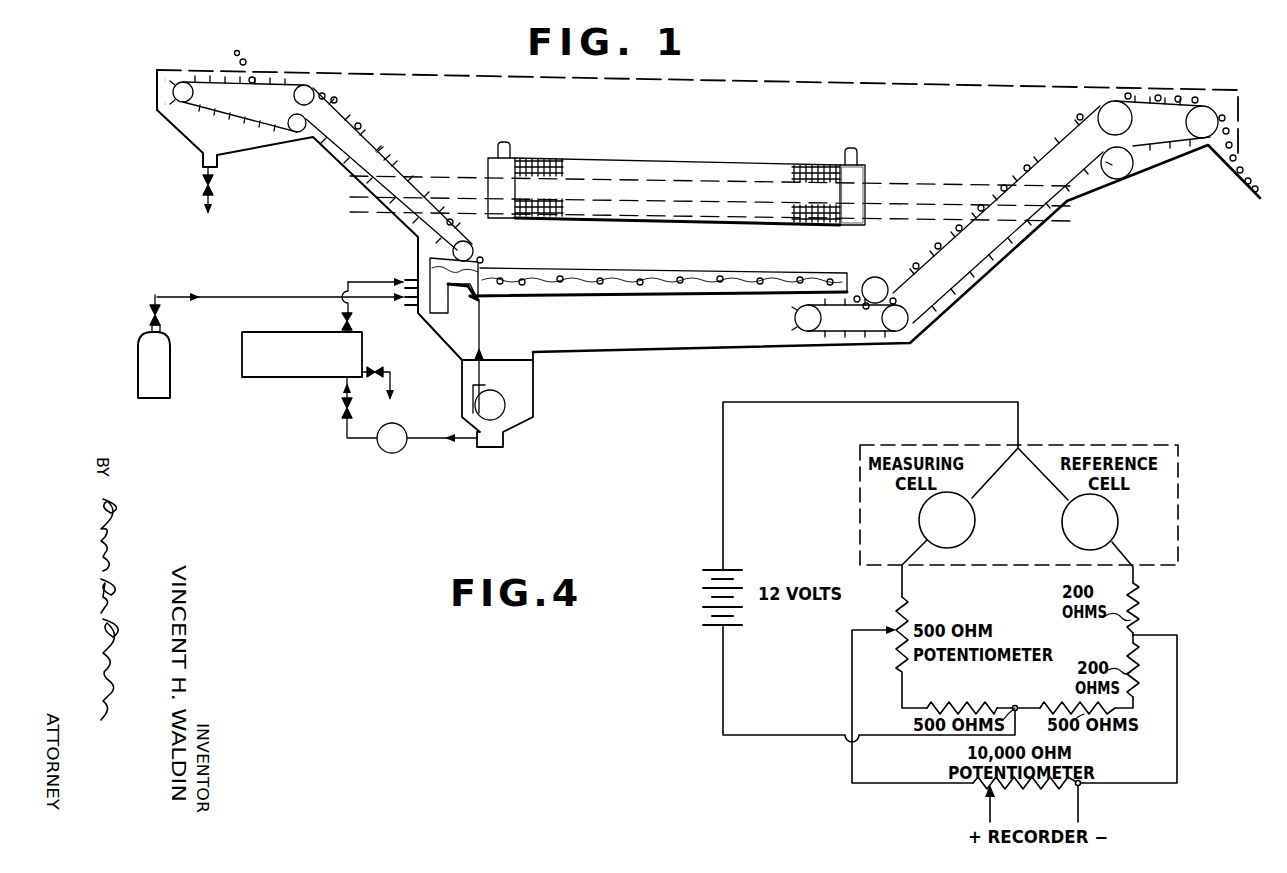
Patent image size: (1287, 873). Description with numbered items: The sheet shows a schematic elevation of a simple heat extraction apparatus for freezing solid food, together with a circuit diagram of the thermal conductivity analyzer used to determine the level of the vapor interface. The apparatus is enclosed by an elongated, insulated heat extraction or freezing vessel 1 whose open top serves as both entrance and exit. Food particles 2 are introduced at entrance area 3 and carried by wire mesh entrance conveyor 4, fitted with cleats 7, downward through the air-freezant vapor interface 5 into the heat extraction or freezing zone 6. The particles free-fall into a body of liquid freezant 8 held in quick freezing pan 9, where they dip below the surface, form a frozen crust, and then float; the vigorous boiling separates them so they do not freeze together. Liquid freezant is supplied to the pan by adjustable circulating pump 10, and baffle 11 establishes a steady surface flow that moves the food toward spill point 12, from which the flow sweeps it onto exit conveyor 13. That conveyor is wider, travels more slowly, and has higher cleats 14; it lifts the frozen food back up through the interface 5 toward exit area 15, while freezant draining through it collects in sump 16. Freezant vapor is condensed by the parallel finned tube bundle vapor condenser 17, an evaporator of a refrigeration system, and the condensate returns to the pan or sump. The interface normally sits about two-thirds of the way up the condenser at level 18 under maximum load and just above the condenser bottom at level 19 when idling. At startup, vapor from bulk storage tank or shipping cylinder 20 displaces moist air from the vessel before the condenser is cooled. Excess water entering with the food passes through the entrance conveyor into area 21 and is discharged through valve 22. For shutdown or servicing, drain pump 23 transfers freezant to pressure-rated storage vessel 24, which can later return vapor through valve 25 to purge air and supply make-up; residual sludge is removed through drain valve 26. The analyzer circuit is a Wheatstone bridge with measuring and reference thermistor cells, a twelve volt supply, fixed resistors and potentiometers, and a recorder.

The heat extraction or freezing vessel 1 is at (355, 191).
The food particles 2 is at (232, 54).
The entrance area 3 is at (213, 70).
The entrance conveyor 4 is at (345, 128).
The air-100% freezant vapor interface 5 is at (446, 196).
The heat extraction or freezing zone 6 is at (669, 253).
The cleats 7 is at (374, 160).
The liquid freezant 8 is at (528, 280).
The quick freezing pan 9 is at (578, 272).
The adjustable circulating pump 10 is at (498, 384).
The baffle 11 is at (489, 262).
The spill point 12 is at (871, 284).
The exit conveyor 13 is at (1060, 142).
The cleats 14 is at (1096, 113).
The exit area 15 is at (1222, 128).
The sump 16 is at (540, 402).
The parallel finned tube bundle vapor condenser 17 is at (865, 172).
The level 18 is at (951, 186).
The level 19 is at (904, 223).
The bulk storage tank or shipping cylinder 20 is at (168, 371).
The area 21 is at (220, 142).
The valve 22 is at (222, 191).
The drain pump 23 is at (400, 450).
The storage vessel 24 is at (316, 361).
The valve 25 is at (355, 318).
The drain valve 26 is at (378, 368).